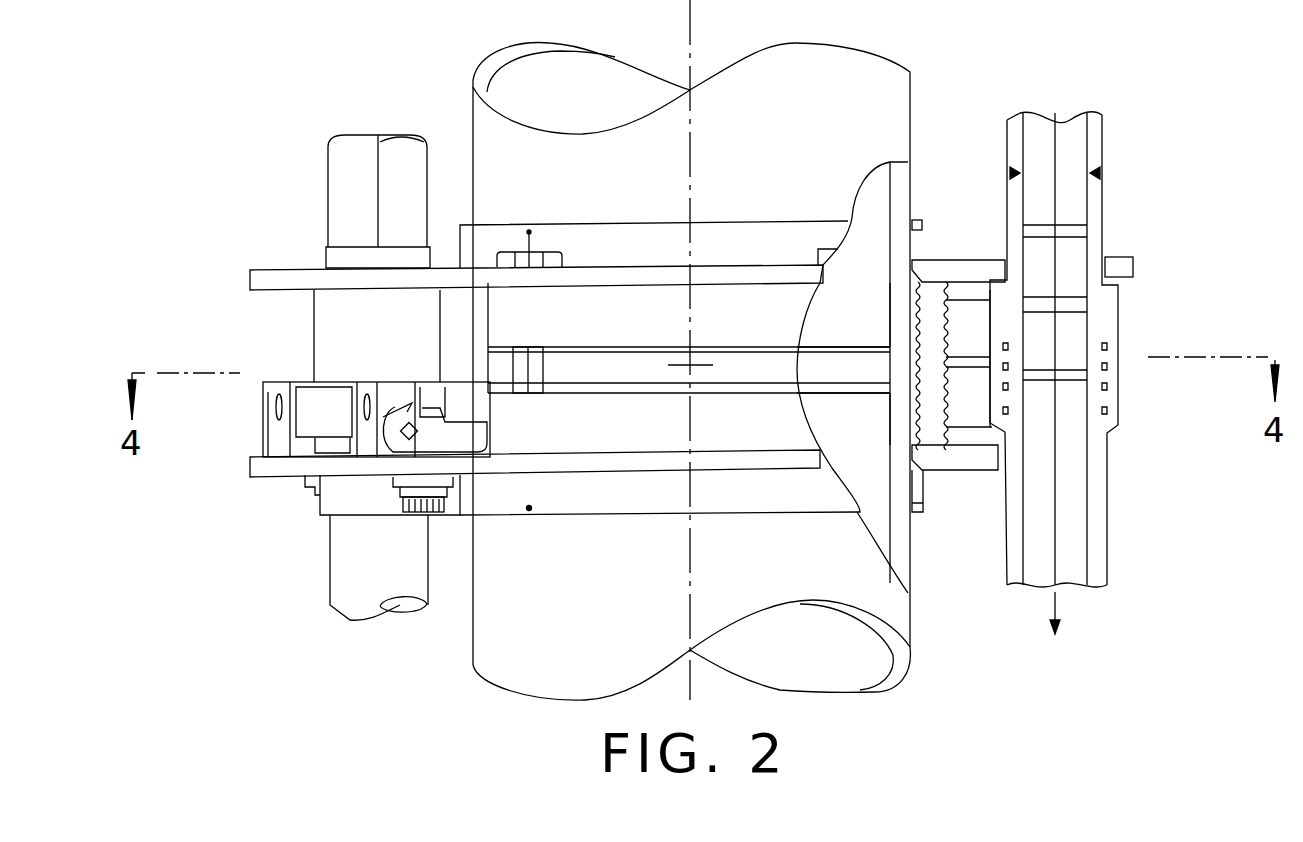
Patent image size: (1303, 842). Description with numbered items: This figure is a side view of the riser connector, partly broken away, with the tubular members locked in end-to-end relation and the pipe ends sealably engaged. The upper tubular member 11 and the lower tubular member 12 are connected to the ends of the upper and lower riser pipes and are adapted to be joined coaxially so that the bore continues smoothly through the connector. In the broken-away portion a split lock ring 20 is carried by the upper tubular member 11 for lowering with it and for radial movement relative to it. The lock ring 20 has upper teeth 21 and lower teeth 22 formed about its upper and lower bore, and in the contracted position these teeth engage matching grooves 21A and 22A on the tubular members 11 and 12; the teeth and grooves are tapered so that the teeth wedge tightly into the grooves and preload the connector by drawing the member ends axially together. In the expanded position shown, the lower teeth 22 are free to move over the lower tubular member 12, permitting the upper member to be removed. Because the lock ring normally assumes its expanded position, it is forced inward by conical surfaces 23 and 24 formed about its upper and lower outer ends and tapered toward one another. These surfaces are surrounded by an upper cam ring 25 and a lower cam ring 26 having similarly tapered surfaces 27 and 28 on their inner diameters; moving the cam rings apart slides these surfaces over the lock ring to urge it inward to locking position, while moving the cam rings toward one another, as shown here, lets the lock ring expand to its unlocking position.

The upper tubular member 11 is at (822, 230).
The lower tubular member 12 is at (867, 522).
The split lock ring 20 is at (1107, 437).
The upper teeth 21 is at (913, 438).
The grooves 21A is at (908, 408).
The lower teeth 22 is at (908, 315).
The grooves 22A is at (907, 340).
The conical surface 23 is at (963, 297).
The conical surface 24 is at (968, 305).
The upper cam ring 25 is at (980, 348).
The lower cam ring 26 is at (980, 392).
The tapered surface 27 is at (963, 332).
The tapered surface 28 is at (937, 340).